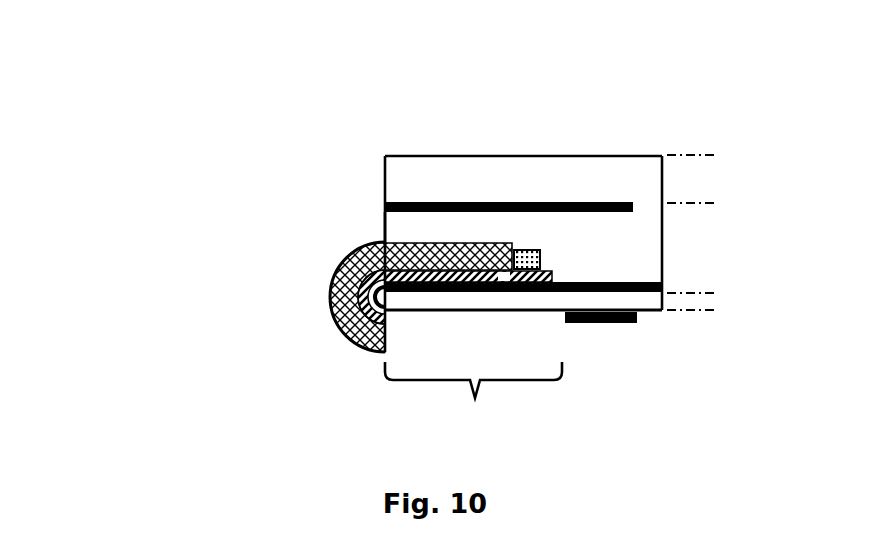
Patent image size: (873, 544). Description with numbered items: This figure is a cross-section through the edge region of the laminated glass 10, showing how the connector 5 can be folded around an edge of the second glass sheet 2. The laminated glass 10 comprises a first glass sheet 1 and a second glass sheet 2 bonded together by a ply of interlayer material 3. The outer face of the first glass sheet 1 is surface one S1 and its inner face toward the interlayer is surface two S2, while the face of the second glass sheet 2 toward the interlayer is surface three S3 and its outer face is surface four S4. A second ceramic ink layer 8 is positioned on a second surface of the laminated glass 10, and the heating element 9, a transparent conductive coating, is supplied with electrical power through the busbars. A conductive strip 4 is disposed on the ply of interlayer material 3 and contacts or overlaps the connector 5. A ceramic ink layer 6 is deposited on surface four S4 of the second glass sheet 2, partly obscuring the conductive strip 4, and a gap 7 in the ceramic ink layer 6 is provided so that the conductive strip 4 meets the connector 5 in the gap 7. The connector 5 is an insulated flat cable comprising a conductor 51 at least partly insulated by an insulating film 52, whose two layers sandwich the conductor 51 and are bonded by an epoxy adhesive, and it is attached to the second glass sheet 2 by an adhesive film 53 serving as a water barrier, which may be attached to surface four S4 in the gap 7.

The laminated glass 10 is at (118, 77).
The first glass sheet 1 is at (663, 150).
The second glass sheet 2 is at (649, 319).
The ply of interlayer material 3 is at (378, 232).
The conductive strip 4 is at (556, 266).
The connector 5 is at (322, 302).
The conductor 51 is at (518, 244).
The insulating film 52 is at (337, 262).
The adhesive film 53 is at (350, 327).
The ceramic ink layer 6 is at (600, 330).
The gap 7 is at (473, 407).
The second ceramic ink layer 8 is at (473, 196).
The heating element 9 is at (666, 285).
The surface 1 S1 is at (726, 153).
The surface 2 S2 is at (726, 198).
The surface 3 S3 is at (728, 289).
The surface 4 S4 is at (728, 314).